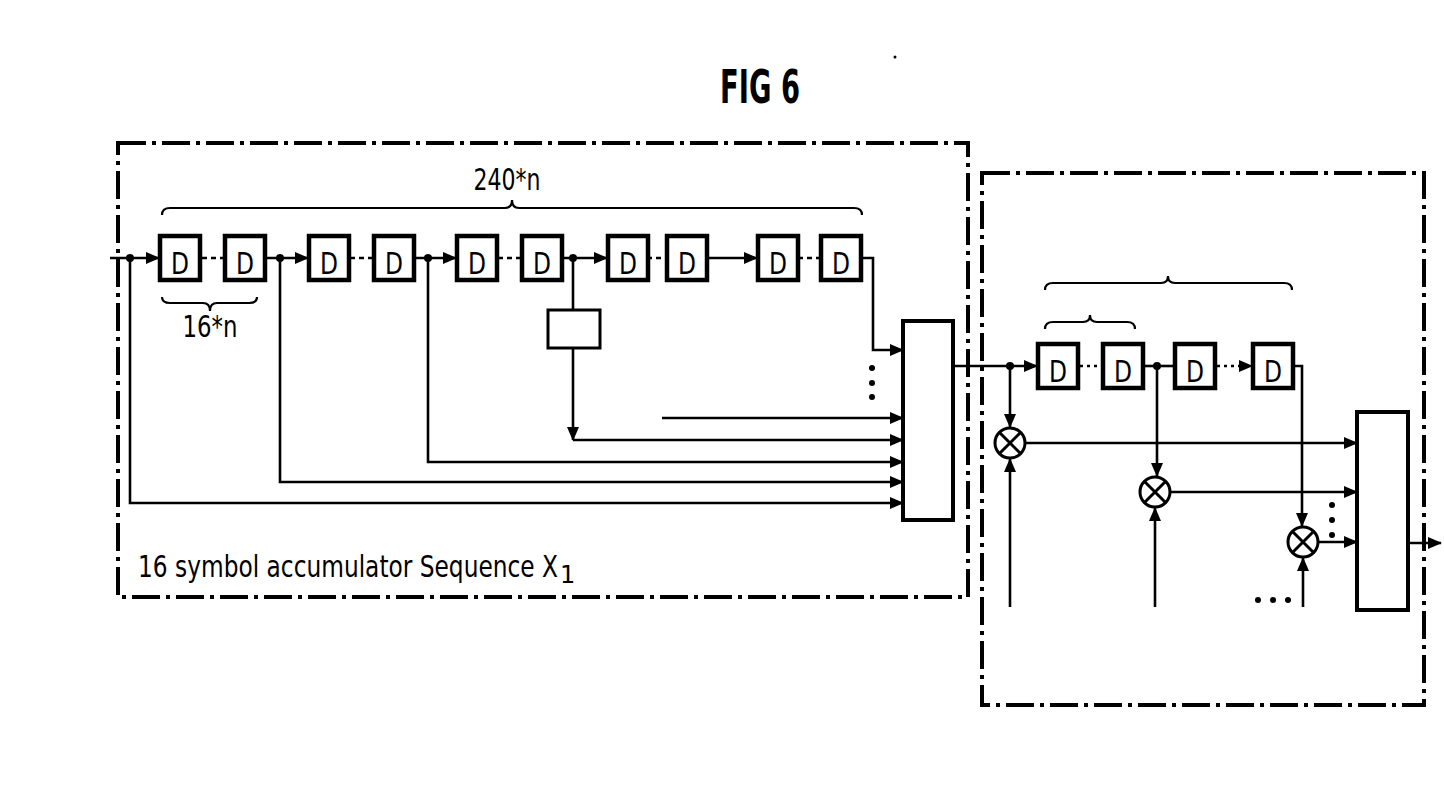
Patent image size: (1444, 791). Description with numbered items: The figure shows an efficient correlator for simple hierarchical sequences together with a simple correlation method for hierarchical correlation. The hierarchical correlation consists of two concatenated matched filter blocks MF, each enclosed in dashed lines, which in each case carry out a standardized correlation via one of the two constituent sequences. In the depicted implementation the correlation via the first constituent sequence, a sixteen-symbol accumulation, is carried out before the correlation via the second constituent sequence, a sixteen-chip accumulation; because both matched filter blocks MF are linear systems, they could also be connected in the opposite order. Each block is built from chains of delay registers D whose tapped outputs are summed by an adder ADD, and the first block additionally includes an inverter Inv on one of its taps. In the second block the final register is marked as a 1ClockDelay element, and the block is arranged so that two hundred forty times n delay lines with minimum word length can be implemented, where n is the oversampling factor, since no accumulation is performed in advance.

The matched filter block MF is at (1243, 174).
The inverter Inv is at (574, 349).
The adder ADD is at (1155, 465).
The delay register D is at (510, 258).
The one clock delay register 1ClockDelay is at (1293, 347).